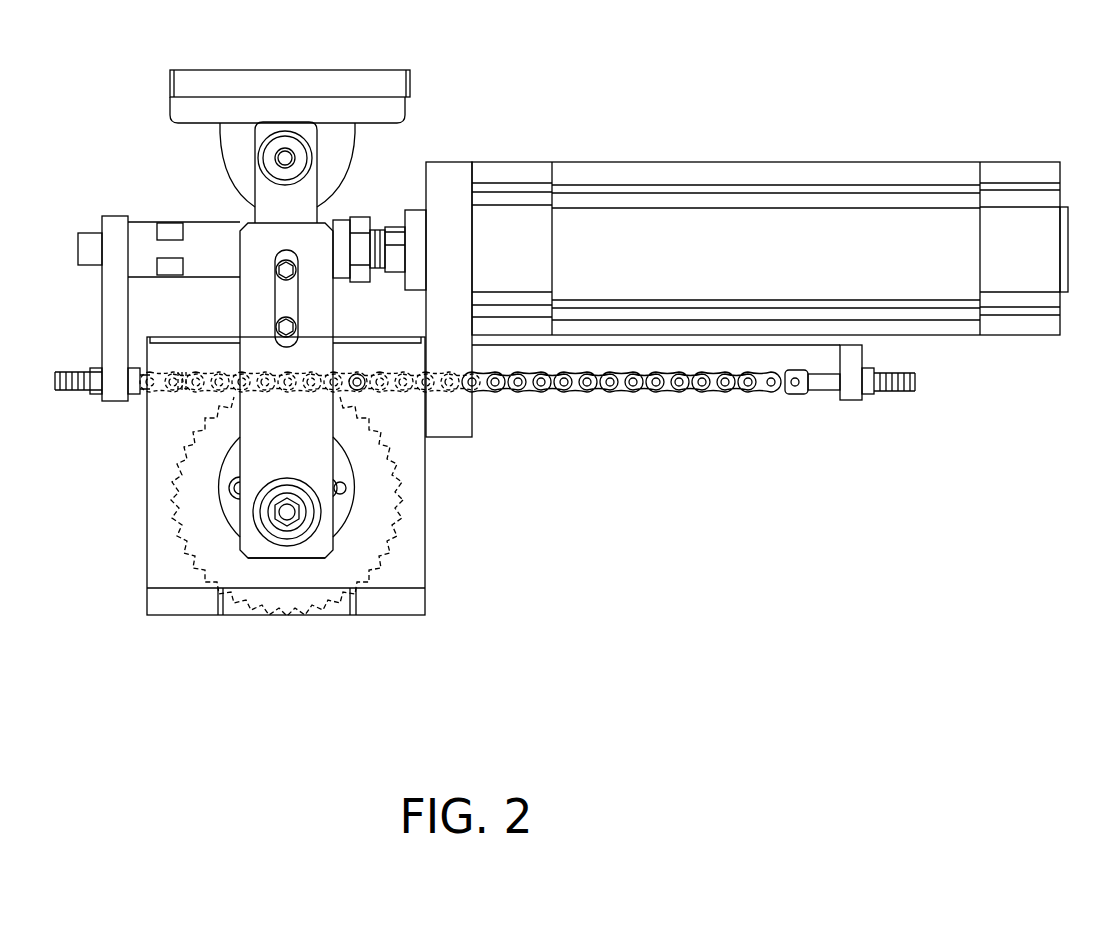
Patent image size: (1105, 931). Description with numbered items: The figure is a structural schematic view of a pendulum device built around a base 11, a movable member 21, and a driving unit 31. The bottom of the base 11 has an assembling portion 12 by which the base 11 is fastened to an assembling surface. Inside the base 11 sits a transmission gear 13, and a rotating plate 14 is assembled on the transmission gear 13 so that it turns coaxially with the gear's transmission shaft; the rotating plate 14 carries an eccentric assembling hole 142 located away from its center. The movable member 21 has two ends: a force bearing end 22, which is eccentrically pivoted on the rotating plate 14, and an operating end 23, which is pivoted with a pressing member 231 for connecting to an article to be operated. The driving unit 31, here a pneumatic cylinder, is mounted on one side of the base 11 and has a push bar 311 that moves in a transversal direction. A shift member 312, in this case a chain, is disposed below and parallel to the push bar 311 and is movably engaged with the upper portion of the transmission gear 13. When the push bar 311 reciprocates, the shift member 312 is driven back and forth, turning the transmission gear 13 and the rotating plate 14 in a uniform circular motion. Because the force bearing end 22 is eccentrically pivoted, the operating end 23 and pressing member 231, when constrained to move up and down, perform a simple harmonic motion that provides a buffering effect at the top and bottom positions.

The base 11 is at (163, 496).
The assembling portion 12 is at (418, 605).
The transmission gear 13 is at (173, 528).
The rotating plate 14 is at (233, 513).
The eccentric assembling hole 142 is at (307, 515).
The movable member 21 is at (327, 423).
The force bearing end 22 is at (316, 548).
The operating end 23 is at (297, 130).
The pressing member 231 is at (402, 84).
The driving unit 31 is at (727, 176).
The push bar 311 is at (202, 231).
The shift member 312 is at (190, 394).